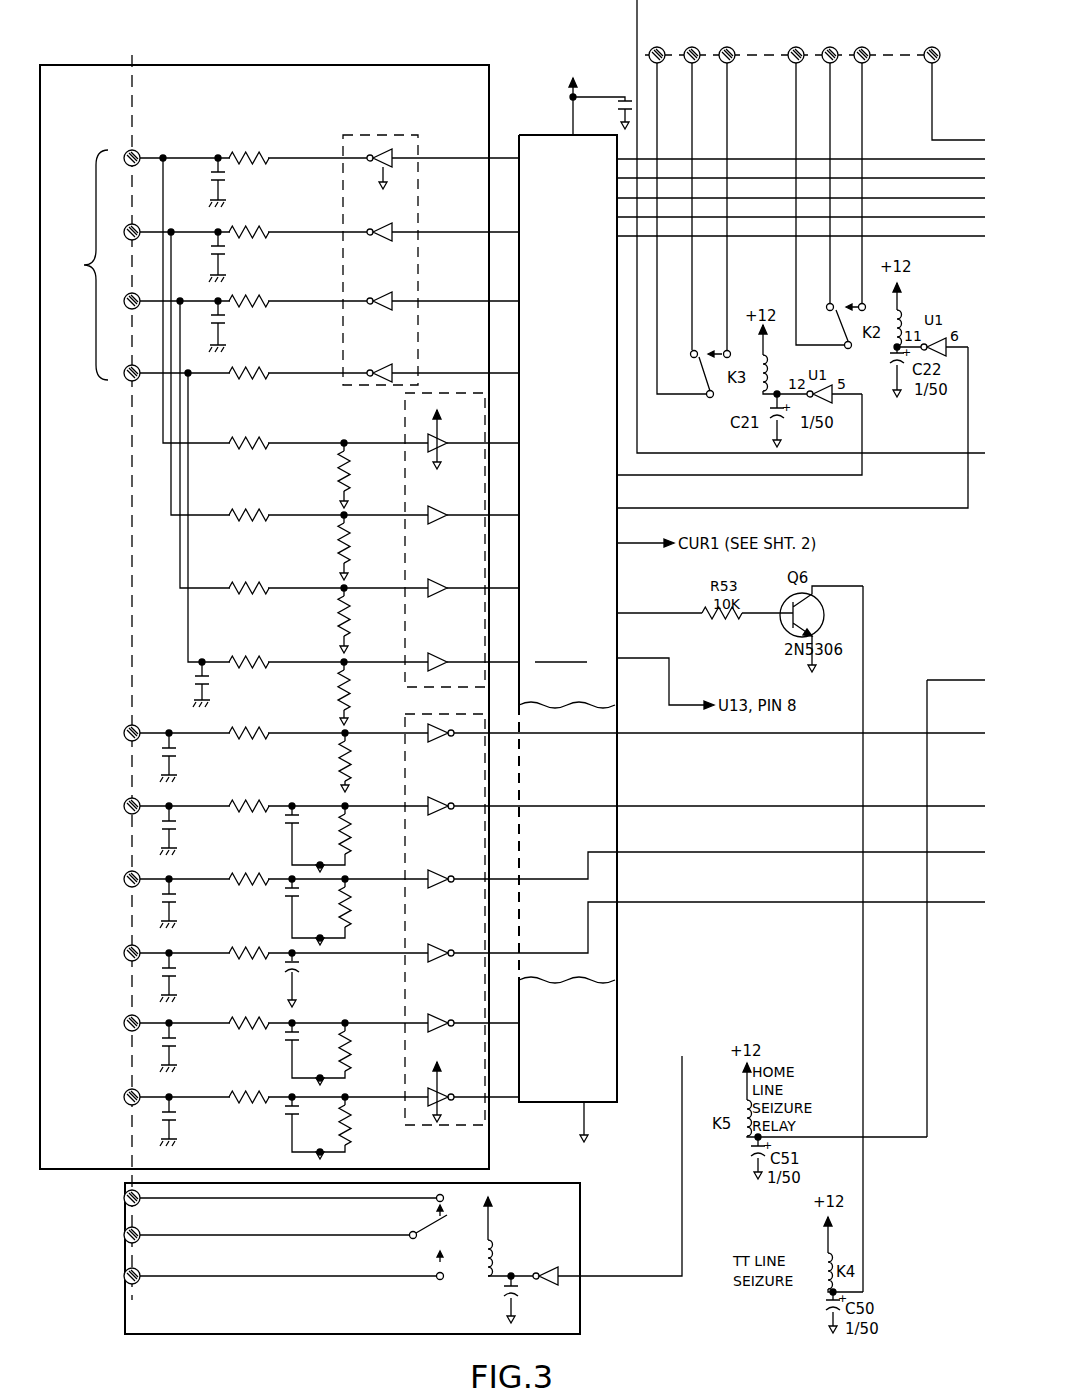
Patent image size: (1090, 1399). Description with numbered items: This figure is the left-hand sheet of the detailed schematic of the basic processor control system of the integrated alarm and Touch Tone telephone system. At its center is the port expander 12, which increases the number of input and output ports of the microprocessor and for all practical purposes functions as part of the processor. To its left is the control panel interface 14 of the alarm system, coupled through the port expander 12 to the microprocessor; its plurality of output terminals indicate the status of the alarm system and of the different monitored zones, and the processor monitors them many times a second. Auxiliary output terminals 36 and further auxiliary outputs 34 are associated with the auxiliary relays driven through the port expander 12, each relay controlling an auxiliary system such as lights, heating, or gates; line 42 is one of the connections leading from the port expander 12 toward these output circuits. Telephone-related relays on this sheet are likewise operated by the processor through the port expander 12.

The control panel interface 14 is at (324, 116).
The port expander 12 is at (576, 389).
The auxiliary outputs 36 is at (900, 24).
The auxiliary outputs 34 is at (155, 1329).
The line from port expander pin 17 42 is at (659, 612).